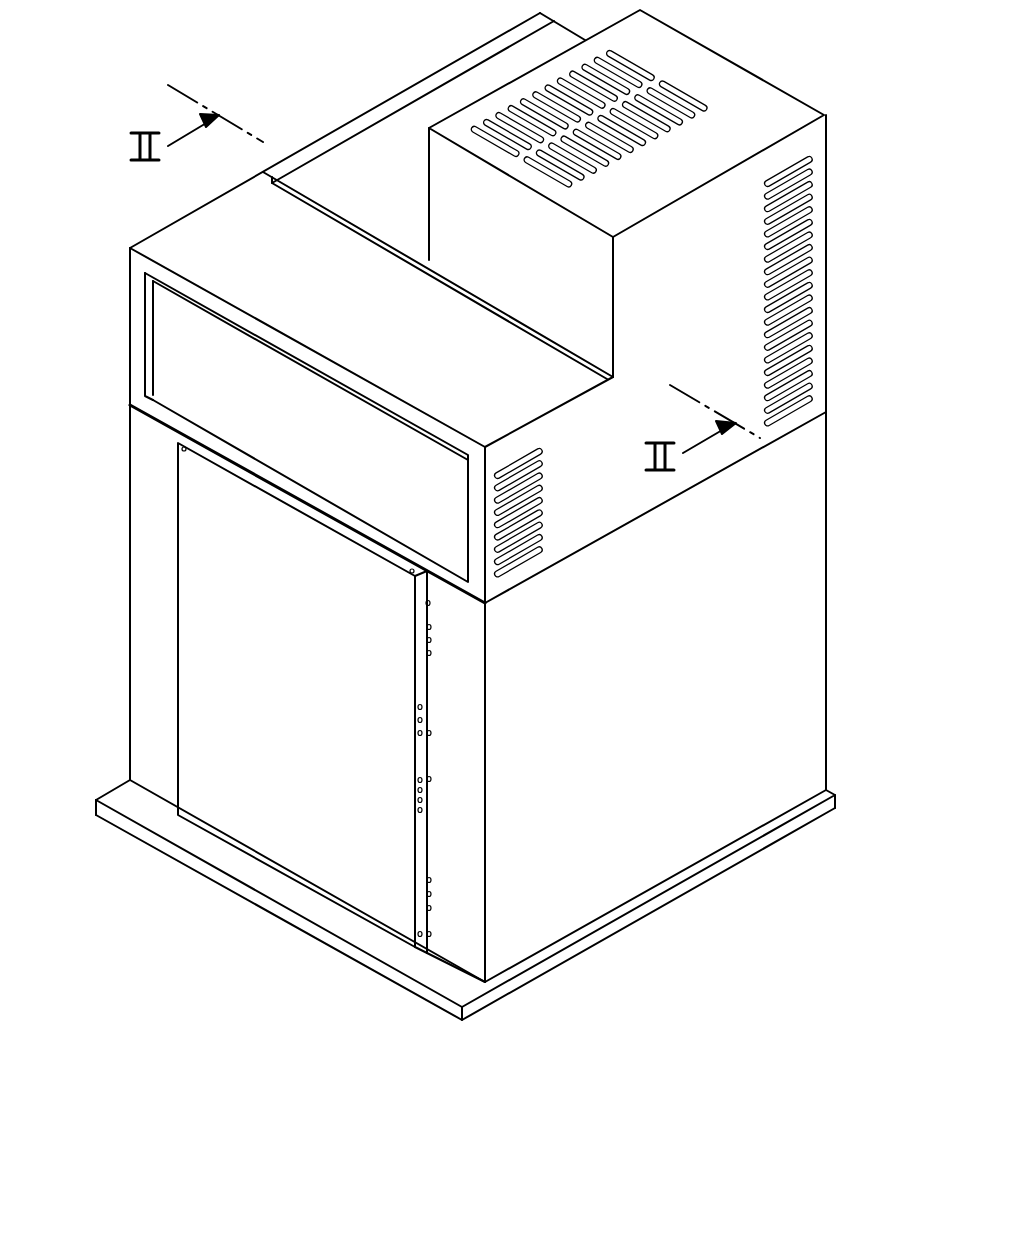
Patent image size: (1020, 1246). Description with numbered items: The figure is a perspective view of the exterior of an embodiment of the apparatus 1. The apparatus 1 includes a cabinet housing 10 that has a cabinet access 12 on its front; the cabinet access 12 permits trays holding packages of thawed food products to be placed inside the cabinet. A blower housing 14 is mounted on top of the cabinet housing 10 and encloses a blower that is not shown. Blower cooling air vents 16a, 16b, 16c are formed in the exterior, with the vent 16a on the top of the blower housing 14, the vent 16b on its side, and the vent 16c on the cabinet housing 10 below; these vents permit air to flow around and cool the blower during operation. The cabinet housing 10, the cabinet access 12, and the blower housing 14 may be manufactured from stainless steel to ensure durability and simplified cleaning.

The apparatus 1 is at (100, 431).
The cabinet housing 10 is at (826, 655).
The cabinet access 12 is at (178, 655).
The blower housing 14 is at (747, 72).
The blower cooling air vent 16a is at (717, 118).
The blower cooling air vent 16b is at (813, 197).
The blower cooling air vent 16c is at (544, 517).